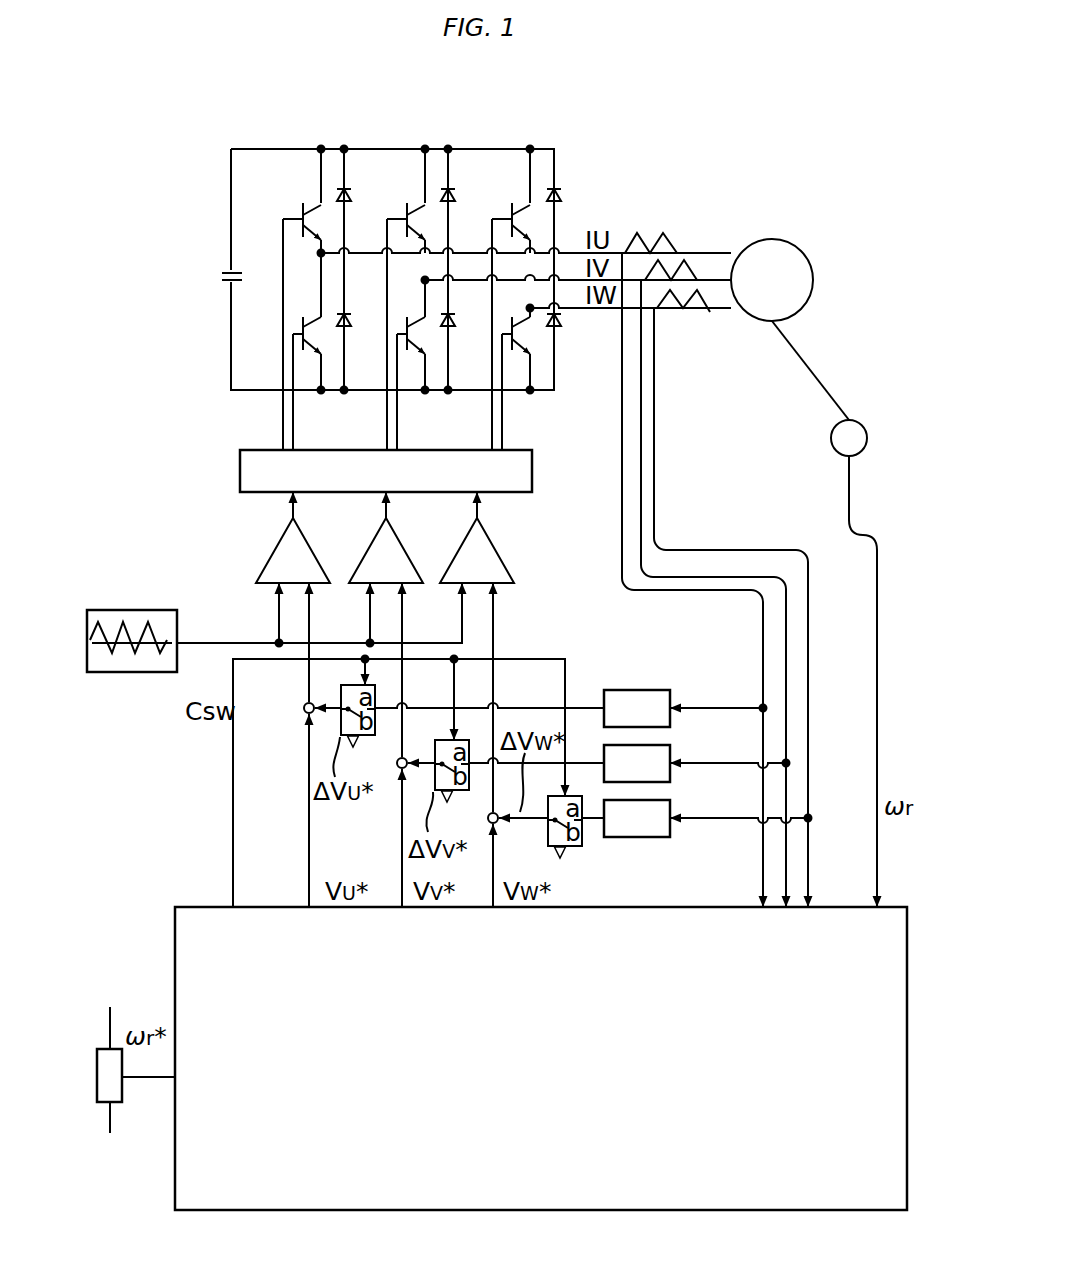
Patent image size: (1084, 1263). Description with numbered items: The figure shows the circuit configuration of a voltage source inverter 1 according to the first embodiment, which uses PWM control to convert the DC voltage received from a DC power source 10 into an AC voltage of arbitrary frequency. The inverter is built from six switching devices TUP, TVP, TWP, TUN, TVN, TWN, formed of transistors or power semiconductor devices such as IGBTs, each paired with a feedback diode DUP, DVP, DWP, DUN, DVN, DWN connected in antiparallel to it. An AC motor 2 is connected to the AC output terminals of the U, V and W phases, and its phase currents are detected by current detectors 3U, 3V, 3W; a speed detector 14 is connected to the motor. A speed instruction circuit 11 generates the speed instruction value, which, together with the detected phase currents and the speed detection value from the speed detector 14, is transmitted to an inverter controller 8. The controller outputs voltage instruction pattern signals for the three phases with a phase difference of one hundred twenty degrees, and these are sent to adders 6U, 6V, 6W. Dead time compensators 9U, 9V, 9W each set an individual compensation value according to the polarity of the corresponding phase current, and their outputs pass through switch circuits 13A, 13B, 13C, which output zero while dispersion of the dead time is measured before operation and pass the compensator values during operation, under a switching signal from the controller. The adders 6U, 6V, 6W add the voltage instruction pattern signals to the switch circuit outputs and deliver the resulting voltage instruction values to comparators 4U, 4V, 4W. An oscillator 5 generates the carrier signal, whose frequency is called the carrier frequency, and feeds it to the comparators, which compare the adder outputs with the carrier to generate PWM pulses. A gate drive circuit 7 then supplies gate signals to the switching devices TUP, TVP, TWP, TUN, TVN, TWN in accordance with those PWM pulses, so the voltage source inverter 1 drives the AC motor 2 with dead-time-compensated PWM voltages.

The voltage source inverter 1 is at (553, 148).
The AC motor 2 is at (779, 239).
The current detector 3U is at (656, 236).
The current detector 3V is at (694, 264).
The current detector 3W is at (704, 300).
The comparator 4U is at (270, 560).
The comparator 4V is at (363, 560).
The comparator 4W is at (454, 560).
The oscillator 5 is at (104, 609).
The adder 6U is at (303, 708).
The adder 6V is at (396, 763).
The adder 6W is at (487, 818).
The gate drive circuit 7 is at (534, 468).
The inverter controller 8 is at (891, 906).
The dead time compensator 9U is at (672, 696).
The dead time compensator 9V is at (672, 752).
The dead time compensator 9W is at (672, 807).
The DC power source 10 is at (226, 272).
The speed instruction circuit 11 is at (108, 1049).
The switch circuit 13A is at (346, 684).
The switch circuit 13B is at (440, 739).
The switch circuit 13C is at (582, 847).
The speed detector 14 is at (857, 421).
The switching device TUP is at (318, 211).
The switching device TVP is at (422, 211).
The switching device TWP is at (527, 211).
The switching device TUN is at (304, 352).
The switching device TVN is at (408, 352).
The switching device TWN is at (513, 352).
The feedback diode DUP is at (350, 189).
The feedback diode DVP is at (454, 189).
The feedback diode DWP is at (561, 197).
The feedback diode DUN is at (351, 322).
The feedback diode DVN is at (455, 322).
The feedback diode DWN is at (565, 322).